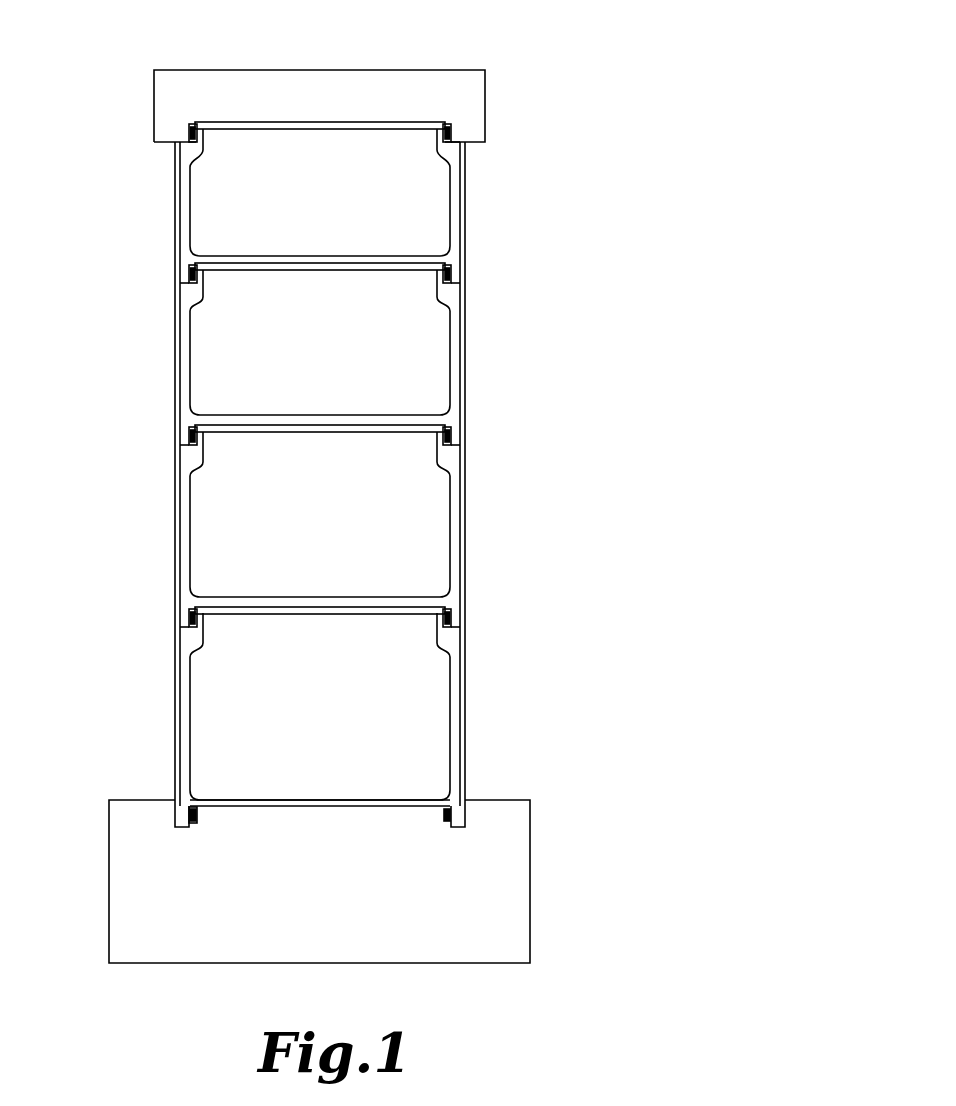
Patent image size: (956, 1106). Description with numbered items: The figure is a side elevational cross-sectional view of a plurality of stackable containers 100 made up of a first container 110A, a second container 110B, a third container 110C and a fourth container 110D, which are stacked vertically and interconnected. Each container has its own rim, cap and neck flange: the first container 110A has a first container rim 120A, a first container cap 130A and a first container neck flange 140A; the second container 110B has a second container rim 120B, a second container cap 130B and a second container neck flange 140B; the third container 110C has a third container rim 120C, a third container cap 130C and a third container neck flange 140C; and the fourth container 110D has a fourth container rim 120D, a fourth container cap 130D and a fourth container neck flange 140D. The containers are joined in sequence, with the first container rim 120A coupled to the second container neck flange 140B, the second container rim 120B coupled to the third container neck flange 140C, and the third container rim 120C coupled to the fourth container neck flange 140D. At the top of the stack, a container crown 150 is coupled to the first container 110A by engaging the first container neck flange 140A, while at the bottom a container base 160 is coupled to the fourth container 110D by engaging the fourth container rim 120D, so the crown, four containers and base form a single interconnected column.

The plurality of stackable containers 100 is at (588, 84).
The first container 110A is at (152, 194).
The second container 110B is at (152, 353).
The third container 110C is at (152, 525).
The fourth container 110D is at (152, 691).
The first container rim 120A is at (186, 273).
The second container rim 120B is at (186, 435).
The third container rim 120C is at (186, 618).
The fourth container rim 120D is at (182, 816).
The first container cap 130A is at (349, 122).
The second container cap 130B is at (407, 272).
The third container cap 130C is at (407, 434).
The fourth container cap 130D is at (407, 615).
The first container neck flange 140A is at (451, 136).
The second container neck flange 140B is at (451, 274).
The third container neck flange 140C is at (451, 437).
The fourth container neck flange 140D is at (451, 618).
The container crown 150 is at (424, 70).
The container base 160 is at (522, 883).